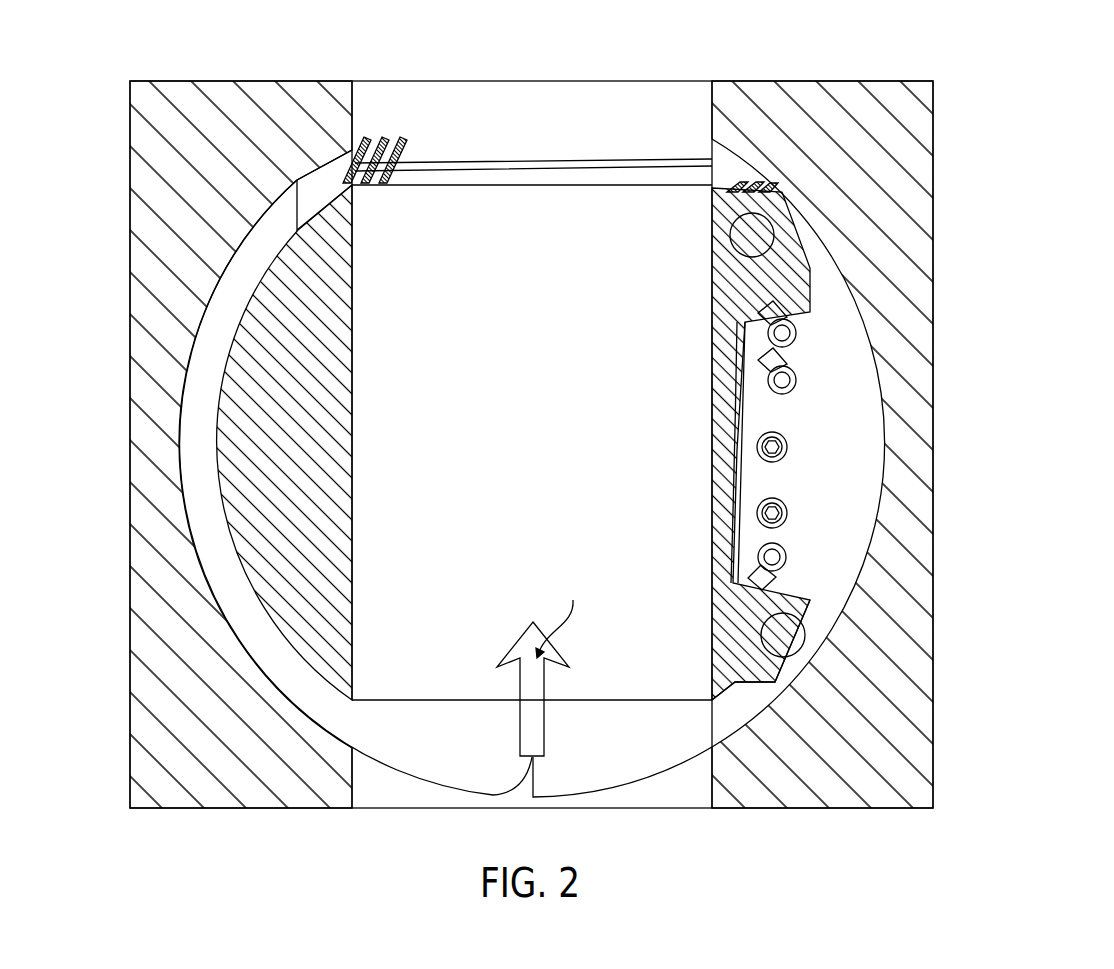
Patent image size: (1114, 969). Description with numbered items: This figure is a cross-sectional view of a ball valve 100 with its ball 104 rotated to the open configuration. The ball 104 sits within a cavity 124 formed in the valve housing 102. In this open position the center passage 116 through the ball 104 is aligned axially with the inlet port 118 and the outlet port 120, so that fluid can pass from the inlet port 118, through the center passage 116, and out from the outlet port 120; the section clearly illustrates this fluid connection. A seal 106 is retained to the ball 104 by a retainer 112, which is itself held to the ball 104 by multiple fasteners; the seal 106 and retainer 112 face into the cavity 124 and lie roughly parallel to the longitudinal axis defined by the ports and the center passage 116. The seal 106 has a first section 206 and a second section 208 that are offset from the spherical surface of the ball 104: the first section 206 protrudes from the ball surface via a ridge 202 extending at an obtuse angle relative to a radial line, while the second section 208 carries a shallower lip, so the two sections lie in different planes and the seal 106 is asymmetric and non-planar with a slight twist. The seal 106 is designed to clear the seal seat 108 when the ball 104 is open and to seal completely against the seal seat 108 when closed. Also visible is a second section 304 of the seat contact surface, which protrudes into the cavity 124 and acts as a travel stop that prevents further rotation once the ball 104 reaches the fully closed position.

The ball valve 100 is at (1010, 290).
The valve housing 102 is at (206, 168).
The ball 104 is at (273, 578).
The seal 106 is at (773, 227).
The seal seat 108 is at (551, 138).
The retainer 112 is at (793, 417).
The center passage 116 is at (551, 443).
The inlet port 118 is at (406, 796).
The outlet port 120 is at (640, 100).
The cavity 124 is at (843, 540).
The ridge 202 is at (785, 678).
The first section of seal 206 is at (790, 668).
The second section of seal 208 is at (800, 253).
The second section of contact surface 304 is at (315, 192).